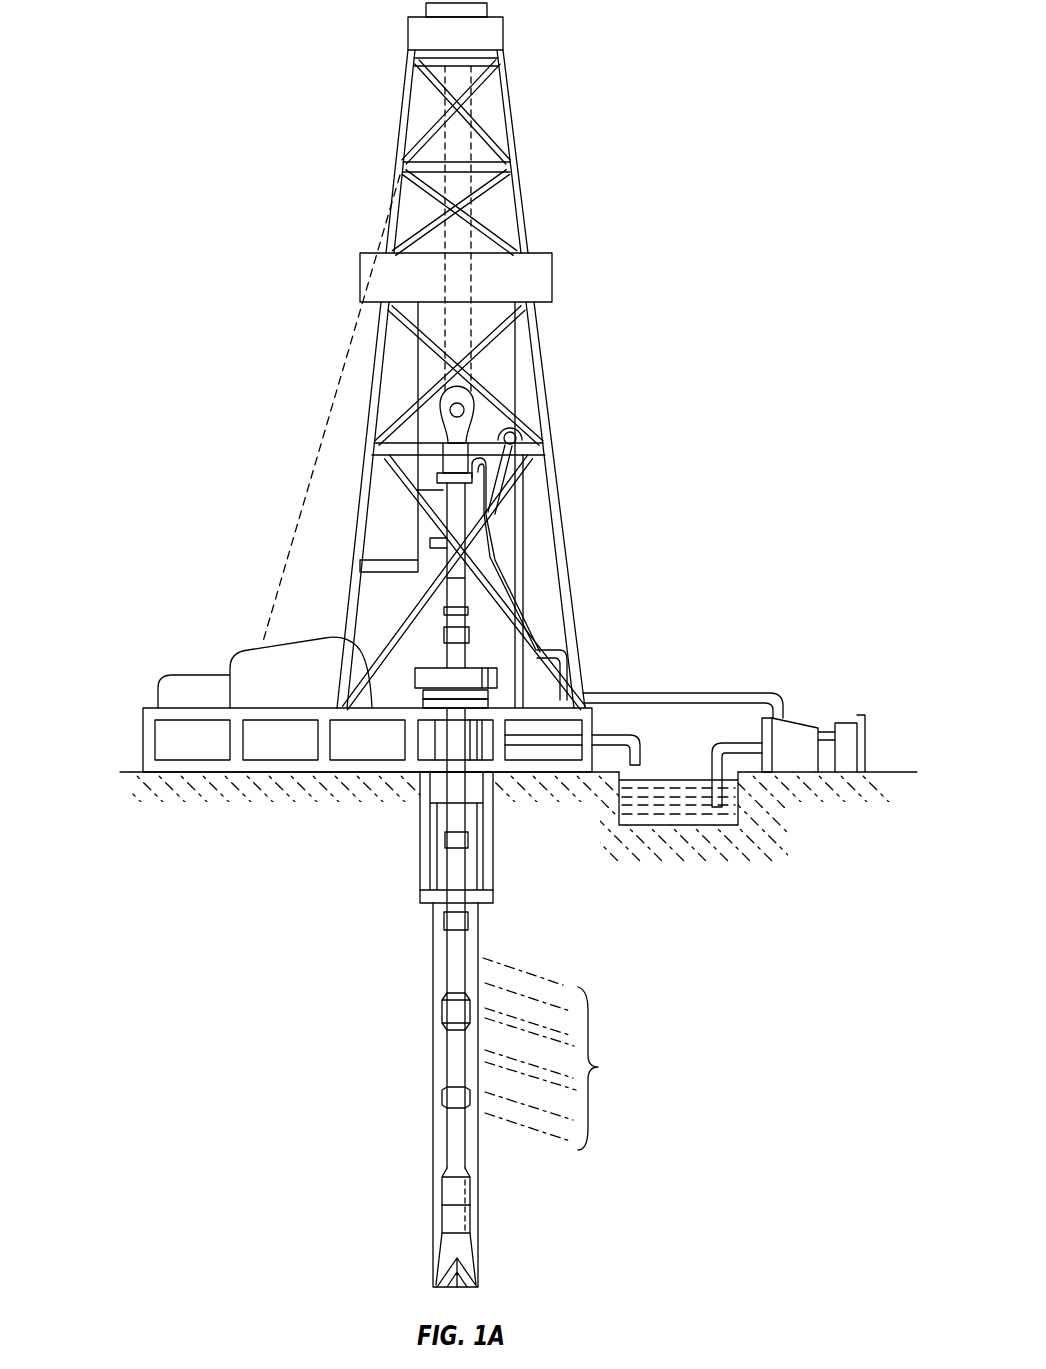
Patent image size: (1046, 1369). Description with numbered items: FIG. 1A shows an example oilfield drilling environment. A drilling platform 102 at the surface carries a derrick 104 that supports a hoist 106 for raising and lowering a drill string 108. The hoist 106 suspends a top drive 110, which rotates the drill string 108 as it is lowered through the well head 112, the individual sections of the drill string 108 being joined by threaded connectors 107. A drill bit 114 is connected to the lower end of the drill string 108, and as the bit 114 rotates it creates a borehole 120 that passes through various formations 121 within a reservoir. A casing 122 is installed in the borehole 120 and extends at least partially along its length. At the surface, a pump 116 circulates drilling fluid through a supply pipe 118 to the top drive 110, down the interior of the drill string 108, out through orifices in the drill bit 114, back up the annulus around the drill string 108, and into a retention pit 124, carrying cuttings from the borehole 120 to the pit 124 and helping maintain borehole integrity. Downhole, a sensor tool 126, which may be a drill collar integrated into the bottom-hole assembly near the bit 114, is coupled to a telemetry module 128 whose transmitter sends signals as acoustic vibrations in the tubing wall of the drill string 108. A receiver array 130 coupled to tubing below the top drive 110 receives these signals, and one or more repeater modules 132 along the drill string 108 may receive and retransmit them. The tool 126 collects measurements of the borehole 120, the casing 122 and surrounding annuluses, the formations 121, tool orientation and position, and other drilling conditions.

The drilling platform 102 is at (143, 740).
The derrick 104 is at (522, 205).
The hoist 106 is at (465, 408).
The top drive 110 is at (460, 510).
The receiver array 130 is at (467, 611).
The well head 112 is at (485, 668).
The supply pipe 118 is at (705, 692).
The pump 116 is at (795, 733).
The retention pit 124 is at (655, 812).
The casing 122 is at (430, 832).
The drill string 108 is at (483, 962).
The borehole 120 is at (433, 985).
The threaded connectors 107 is at (455, 921).
The repeater module 132 is at (445, 1022).
The formations 121 is at (569, 1054).
The telemetry module 128 is at (450, 1193).
The tool 126 is at (450, 1218).
The drill bit 114 is at (468, 1272).